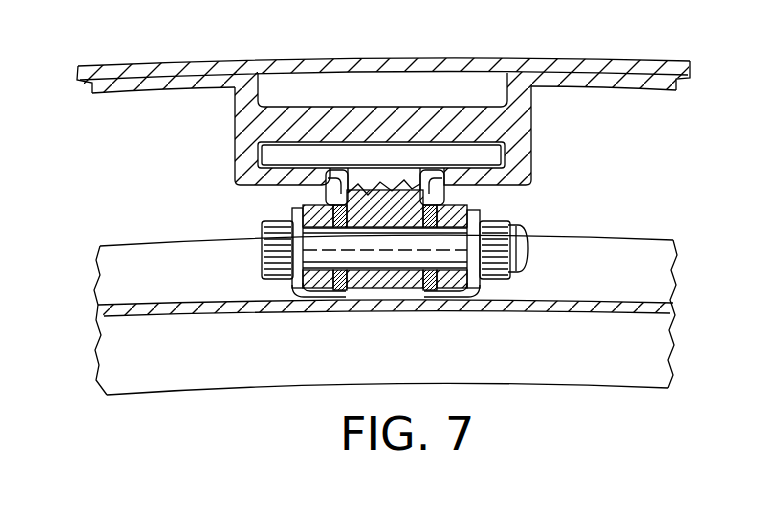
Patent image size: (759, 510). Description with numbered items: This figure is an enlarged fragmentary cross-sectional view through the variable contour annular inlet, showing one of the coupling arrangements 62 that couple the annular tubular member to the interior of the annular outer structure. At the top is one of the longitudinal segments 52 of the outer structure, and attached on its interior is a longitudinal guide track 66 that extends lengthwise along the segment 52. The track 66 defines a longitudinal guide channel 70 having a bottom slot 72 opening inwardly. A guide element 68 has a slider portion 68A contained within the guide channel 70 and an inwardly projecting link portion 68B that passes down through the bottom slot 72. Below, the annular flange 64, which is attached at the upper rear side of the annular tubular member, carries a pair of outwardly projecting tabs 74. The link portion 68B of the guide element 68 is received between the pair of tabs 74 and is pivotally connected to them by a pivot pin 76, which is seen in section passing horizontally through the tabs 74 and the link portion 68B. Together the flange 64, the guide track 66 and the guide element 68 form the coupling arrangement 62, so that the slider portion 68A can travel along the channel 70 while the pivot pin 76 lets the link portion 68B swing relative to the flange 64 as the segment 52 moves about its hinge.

The longitudinal segment 52 is at (537, 58).
The coupling arrangement 62 is at (566, 197).
The annular flange 64 is at (668, 310).
The longitudinal guide track 66 is at (234, 132).
The guide element 68 is at (373, 130).
The slider portion 68A is at (335, 140).
The link portion 68B is at (412, 290).
The longitudinal guide channel 70 is at (455, 144).
The bottom slot 72 is at (333, 196).
The outwardly projecting tab 74 is at (460, 204).
The pivot pin 76 is at (423, 250).